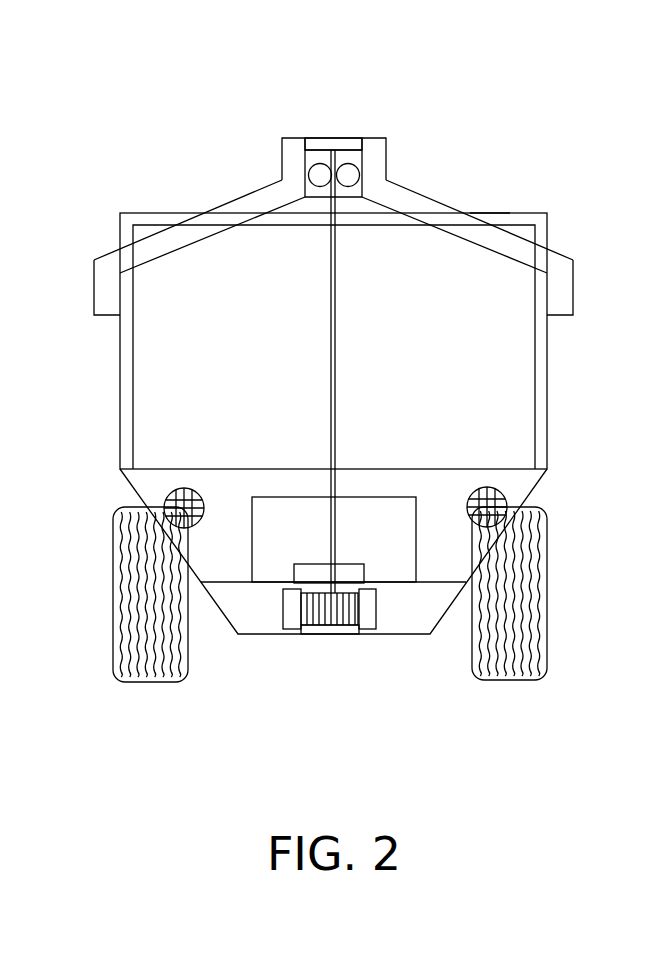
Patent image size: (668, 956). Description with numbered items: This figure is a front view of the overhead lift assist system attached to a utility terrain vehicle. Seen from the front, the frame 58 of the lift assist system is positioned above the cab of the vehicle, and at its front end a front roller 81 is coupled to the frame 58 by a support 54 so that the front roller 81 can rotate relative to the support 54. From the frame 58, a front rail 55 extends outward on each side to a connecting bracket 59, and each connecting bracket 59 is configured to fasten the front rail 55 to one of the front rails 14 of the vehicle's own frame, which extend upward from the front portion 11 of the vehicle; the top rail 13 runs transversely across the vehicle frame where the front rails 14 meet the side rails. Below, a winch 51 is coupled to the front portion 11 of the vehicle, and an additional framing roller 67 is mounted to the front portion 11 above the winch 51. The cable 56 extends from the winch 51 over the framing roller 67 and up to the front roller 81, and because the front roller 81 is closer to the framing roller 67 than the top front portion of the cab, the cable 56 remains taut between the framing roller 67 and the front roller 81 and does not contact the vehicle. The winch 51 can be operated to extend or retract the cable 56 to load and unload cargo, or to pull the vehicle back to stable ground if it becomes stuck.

The front portion 11 is at (424, 606).
The top rail 13 is at (490, 216).
The front rails 14 is at (125, 396).
The winch 51 is at (368, 618).
The support 54 is at (293, 160).
The front rail 55 is at (195, 232).
The cable 56 is at (336, 372).
The frame 58 is at (350, 176).
The connecting bracket 59 is at (103, 292).
The framing roller 67 is at (348, 573).
The front roller 81 is at (343, 143).